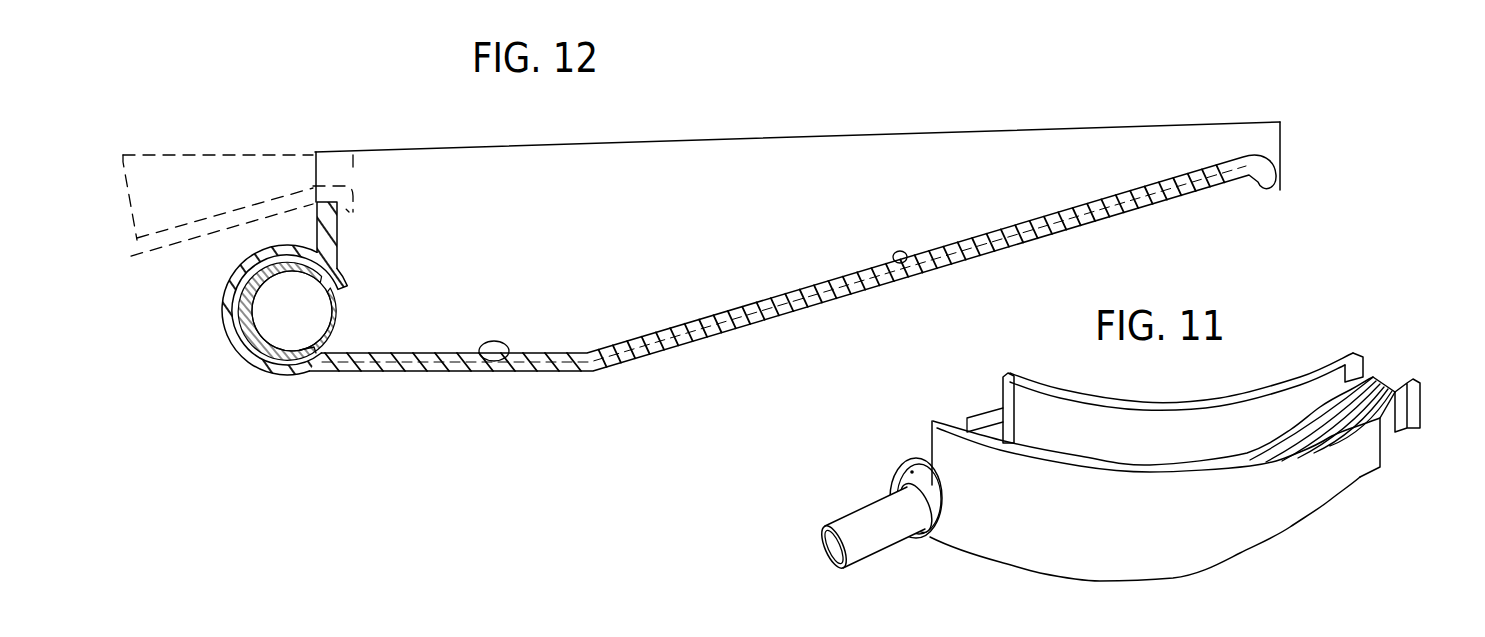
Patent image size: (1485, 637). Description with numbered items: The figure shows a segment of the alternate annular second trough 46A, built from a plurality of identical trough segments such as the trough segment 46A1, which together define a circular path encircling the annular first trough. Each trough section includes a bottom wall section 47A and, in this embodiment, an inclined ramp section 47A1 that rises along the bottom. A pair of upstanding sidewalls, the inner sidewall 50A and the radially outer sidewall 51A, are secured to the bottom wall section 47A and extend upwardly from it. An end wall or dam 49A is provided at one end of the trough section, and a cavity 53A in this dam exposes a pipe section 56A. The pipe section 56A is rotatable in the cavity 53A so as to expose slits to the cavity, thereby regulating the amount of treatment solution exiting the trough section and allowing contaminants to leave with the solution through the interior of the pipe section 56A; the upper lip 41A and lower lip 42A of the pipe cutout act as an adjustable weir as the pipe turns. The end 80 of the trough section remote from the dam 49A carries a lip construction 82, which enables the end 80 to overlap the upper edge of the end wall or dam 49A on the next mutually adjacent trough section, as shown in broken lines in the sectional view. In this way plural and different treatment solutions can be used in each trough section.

In FIG. 12, the upper lip 41A is at (326, 291).
In FIG. 12, the lower lip 42A is at (312, 371).
In FIG. 12, the alternate annular second trough 46A is at (408, 377).
In FIG. 12, the trough segment 46A1 is at (696, 347).
In FIG. 11, the trough segment 46A1 is at (1291, 528).
In FIG. 12, the bottom wall section 47A is at (497, 361).
In FIG. 12, the inclined ramp section 47A1 is at (903, 263).
In FIG. 11, the inclined ramp section 47A1 is at (1312, 425).
In FIG. 12, the end wall or dam 49A is at (334, 248).
In FIG. 11, the end wall or dam 49A is at (1007, 432).
In FIG. 12, the sidewall 50A is at (718, 153).
In FIG. 11, the sidewall 50A is at (1127, 427).
In FIG. 11, the sidewall 51A is at (1037, 557).
In FIG. 12, the cavity 53A is at (340, 341).
In FIG. 12, the pipe section 56A is at (337, 310).
In FIG. 11, the pipe section 56A is at (888, 538).
In FIG. 12, the end of trough section 80 is at (353, 167).
In FIG. 11, the end of trough section 80 is at (1377, 375).
In FIG. 12, the lip construction 82 is at (349, 212).
In FIG. 11, the lip construction 82 is at (1420, 426).